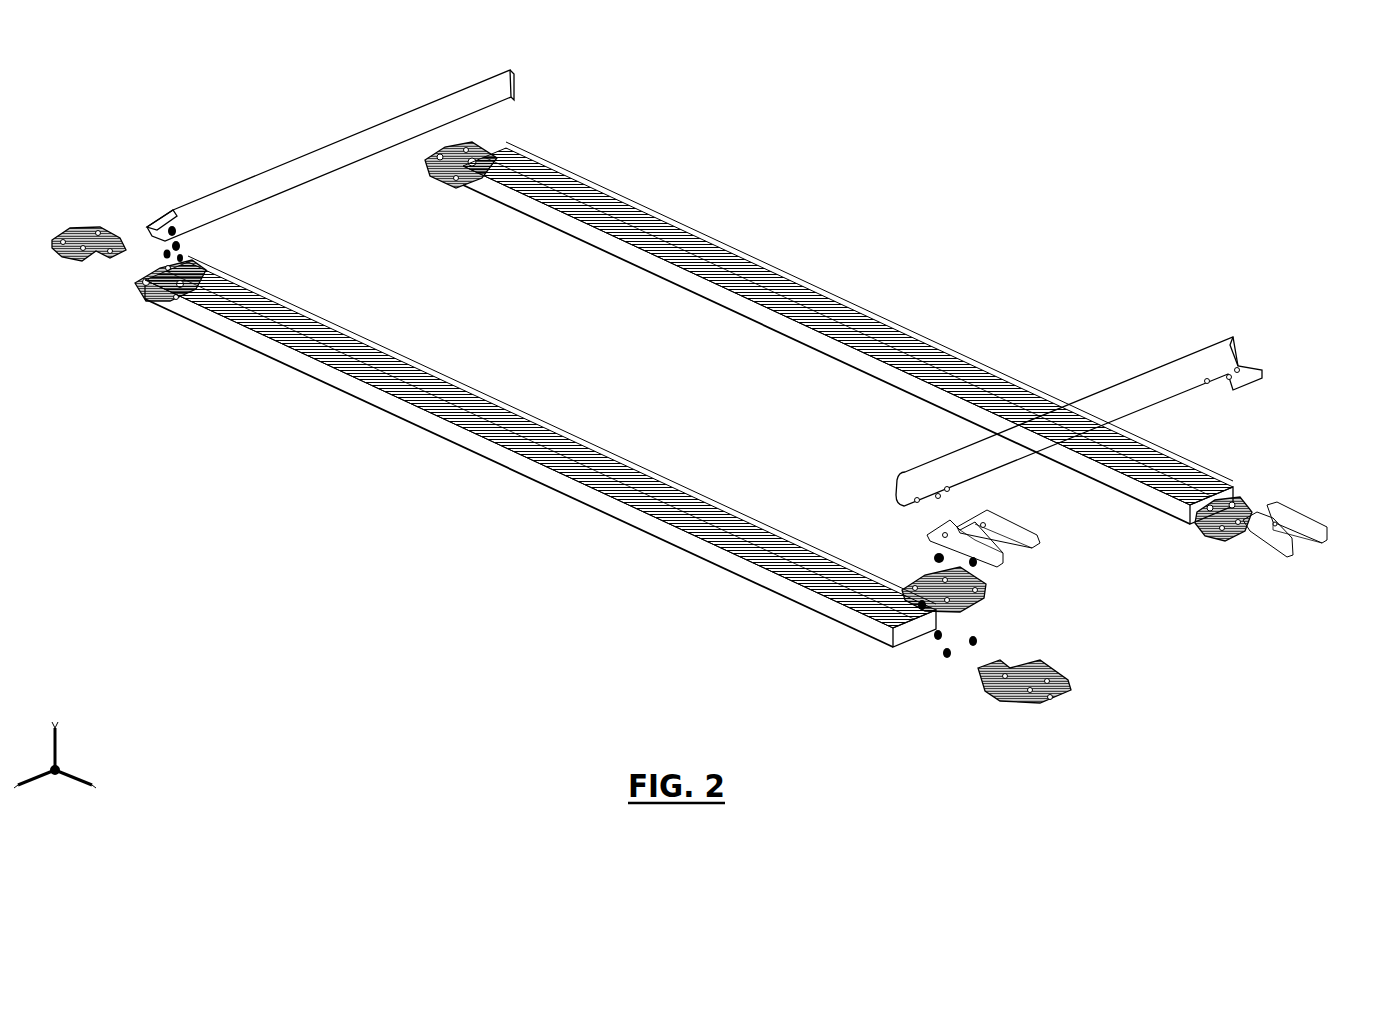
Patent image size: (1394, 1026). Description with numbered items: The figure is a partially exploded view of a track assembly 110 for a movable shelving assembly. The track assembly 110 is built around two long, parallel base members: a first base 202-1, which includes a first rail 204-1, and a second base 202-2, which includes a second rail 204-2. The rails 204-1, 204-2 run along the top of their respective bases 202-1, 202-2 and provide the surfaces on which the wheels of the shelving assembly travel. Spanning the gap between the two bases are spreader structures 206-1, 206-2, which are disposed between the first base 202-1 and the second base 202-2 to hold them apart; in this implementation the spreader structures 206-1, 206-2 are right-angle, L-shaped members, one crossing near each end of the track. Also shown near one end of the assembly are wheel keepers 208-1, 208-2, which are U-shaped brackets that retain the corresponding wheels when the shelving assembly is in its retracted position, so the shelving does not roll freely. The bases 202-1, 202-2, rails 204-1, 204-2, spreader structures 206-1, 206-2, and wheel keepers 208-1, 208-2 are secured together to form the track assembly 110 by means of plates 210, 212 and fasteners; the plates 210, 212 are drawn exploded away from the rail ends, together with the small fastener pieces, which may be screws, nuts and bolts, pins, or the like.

The track assembly 110 is at (279, 70).
The first base 202-1 is at (417, 423).
The second base 202-2 is at (647, 255).
The first rail 204-1 is at (512, 406).
The second rail 204-2 is at (838, 328).
The spreader structure 206-1 is at (975, 460).
The spreader structure 206-2 is at (264, 185).
The wheel keeper 208-1 is at (1020, 533).
The wheel keeper 208-2 is at (1301, 525).
The plate 210 is at (927, 577).
The plate 212 is at (1027, 680).